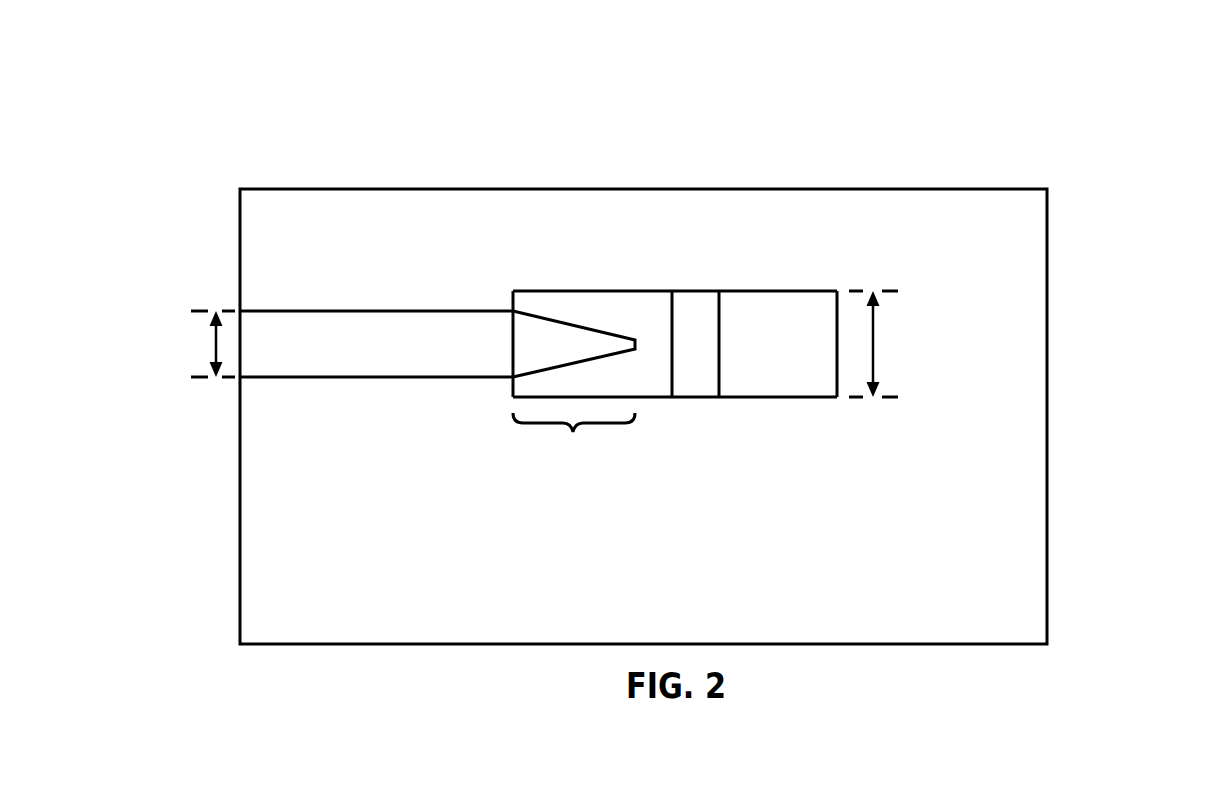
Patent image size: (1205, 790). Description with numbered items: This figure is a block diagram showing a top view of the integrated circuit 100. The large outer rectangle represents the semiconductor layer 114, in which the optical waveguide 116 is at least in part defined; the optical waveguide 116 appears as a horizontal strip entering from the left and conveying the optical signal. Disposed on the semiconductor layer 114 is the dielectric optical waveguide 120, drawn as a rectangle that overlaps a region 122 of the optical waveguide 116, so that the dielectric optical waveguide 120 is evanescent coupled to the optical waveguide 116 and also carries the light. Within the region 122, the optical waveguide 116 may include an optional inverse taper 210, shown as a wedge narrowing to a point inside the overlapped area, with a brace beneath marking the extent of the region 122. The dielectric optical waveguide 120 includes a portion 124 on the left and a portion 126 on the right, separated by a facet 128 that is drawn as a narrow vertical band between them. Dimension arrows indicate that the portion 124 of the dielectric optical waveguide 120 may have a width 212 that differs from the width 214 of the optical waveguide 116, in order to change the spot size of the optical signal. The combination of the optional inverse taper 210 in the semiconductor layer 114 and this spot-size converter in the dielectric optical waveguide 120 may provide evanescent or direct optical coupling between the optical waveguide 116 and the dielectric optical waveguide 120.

The integrated circuit 100 is at (981, 112).
The semiconductor layer 114 is at (1003, 635).
The optical waveguide 116 is at (394, 366).
The dielectric optical waveguide 120 is at (713, 389).
The region 122 is at (574, 451).
The portion 124 is at (652, 380).
The portion 126 is at (802, 307).
The facet 128 is at (700, 308).
The inverse taper 210 is at (553, 345).
The width 212 is at (873, 345).
The width 214 is at (216, 345).